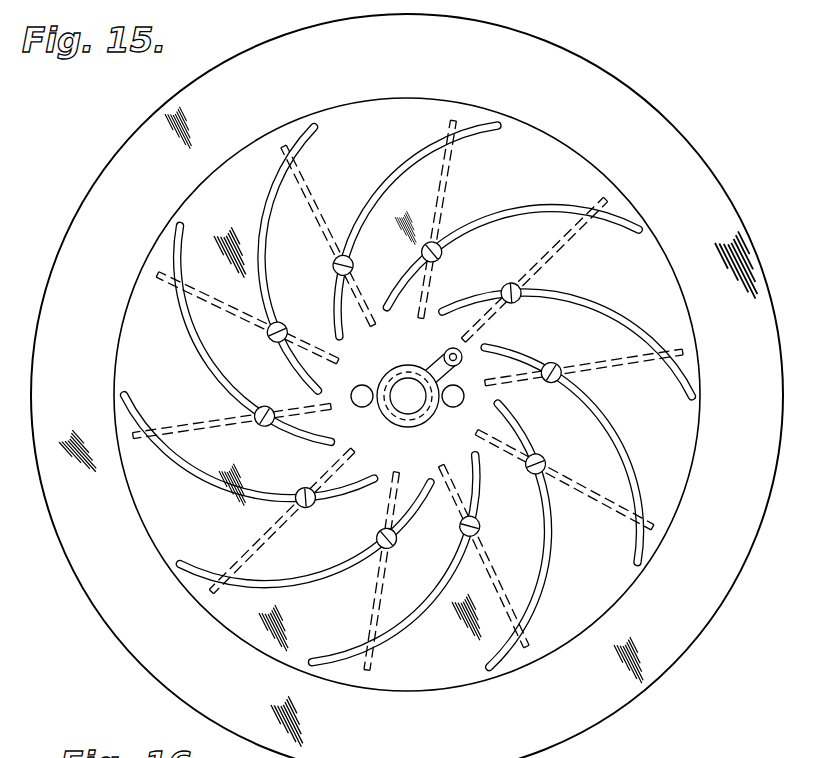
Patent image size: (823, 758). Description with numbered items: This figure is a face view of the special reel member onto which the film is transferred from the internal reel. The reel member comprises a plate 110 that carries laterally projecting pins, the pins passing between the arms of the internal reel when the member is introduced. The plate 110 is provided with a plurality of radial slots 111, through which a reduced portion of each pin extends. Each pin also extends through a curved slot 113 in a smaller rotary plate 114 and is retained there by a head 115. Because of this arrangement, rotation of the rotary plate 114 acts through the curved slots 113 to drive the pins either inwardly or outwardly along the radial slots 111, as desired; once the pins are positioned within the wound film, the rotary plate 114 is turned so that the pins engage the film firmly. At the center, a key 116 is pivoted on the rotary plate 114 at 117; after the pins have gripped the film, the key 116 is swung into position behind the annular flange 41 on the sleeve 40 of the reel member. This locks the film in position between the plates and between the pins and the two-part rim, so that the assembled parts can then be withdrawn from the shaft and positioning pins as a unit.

The plate 110 is at (407, 386).
The rotary plate 114 is at (643, 573).
The radial slots 111 is at (621, 370).
The curved slot 113 is at (550, 553).
The head 115 is at (540, 459).
The key 116 is at (397, 367).
The pivot 117 is at (451, 351).
The sleeve 40 is at (401, 418).
The annular flange 41 is at (436, 410).